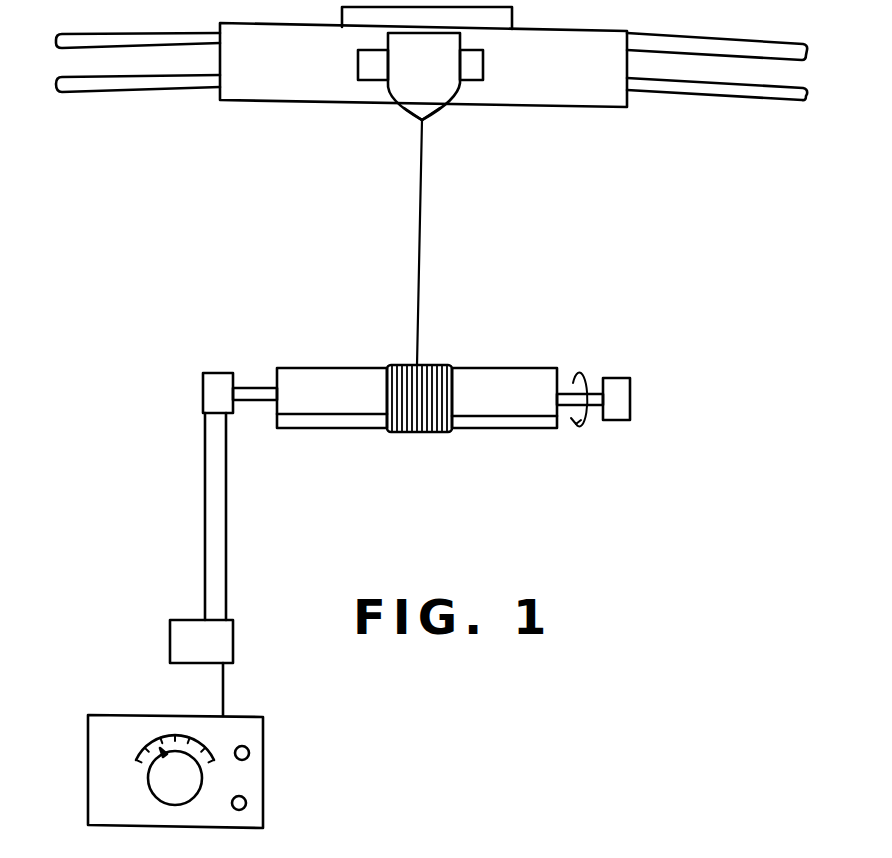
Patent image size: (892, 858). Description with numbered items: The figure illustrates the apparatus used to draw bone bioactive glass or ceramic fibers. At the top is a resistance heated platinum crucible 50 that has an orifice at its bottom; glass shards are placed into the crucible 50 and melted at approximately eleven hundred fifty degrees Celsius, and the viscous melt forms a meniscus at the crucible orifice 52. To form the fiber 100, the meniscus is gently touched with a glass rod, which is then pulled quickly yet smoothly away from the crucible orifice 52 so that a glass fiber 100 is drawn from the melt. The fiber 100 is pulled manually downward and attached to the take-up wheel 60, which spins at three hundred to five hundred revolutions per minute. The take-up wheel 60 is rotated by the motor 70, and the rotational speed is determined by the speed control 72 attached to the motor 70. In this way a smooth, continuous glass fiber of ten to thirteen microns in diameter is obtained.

The crucible 50 is at (435, 93).
The crucible orifice 52 is at (422, 120).
The glass fiber 100 is at (422, 228).
The take-up wheel 60 is at (358, 380).
The motor 70 is at (170, 645).
The speed control 72 is at (128, 715).